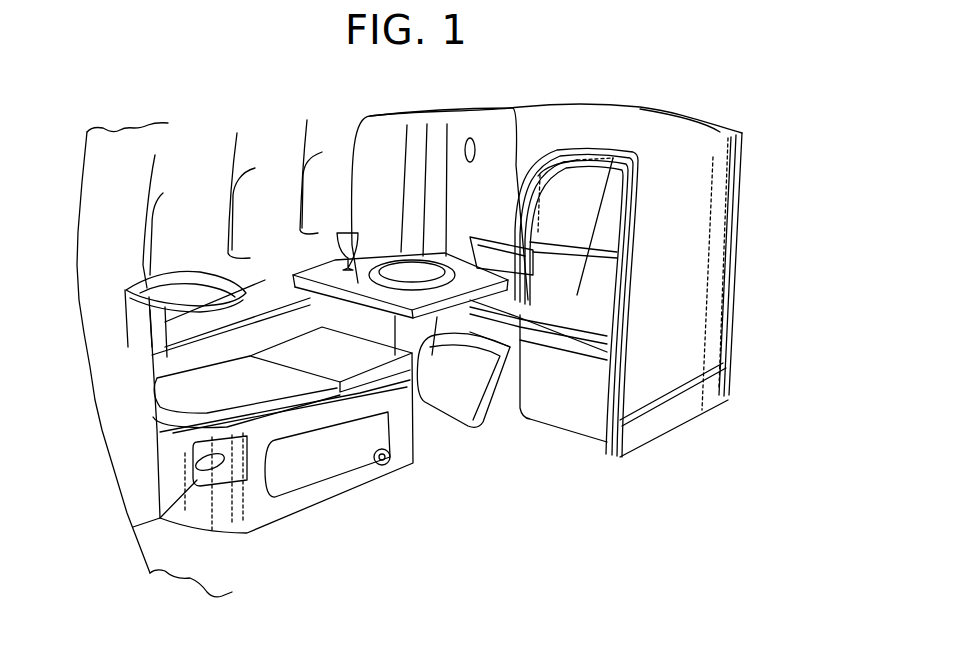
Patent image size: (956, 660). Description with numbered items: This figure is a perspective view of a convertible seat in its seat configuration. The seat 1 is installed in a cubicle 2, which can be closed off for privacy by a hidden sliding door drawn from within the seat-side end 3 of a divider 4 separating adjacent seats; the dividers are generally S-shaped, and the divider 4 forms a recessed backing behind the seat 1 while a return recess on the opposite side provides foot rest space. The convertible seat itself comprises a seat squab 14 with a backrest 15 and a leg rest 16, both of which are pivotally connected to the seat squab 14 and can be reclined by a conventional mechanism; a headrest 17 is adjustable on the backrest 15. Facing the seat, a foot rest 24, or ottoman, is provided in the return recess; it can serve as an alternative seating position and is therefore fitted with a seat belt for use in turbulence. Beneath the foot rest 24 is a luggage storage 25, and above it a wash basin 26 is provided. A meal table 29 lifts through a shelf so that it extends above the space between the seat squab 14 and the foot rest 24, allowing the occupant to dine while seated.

The seat 1 is at (572, 193).
The cubicle 2 is at (500, 445).
The seat-side end 3 is at (625, 352).
The divider 4 is at (628, 123).
The seat squab 14 is at (530, 297).
The backrest 15 is at (547, 263).
The leg rest 16 is at (455, 383).
The headrest 17 is at (550, 217).
The foot rest 24 is at (318, 353).
The luggage storage 25 is at (318, 455).
The wash basin 26 is at (198, 290).
The meal table 29 is at (362, 283).